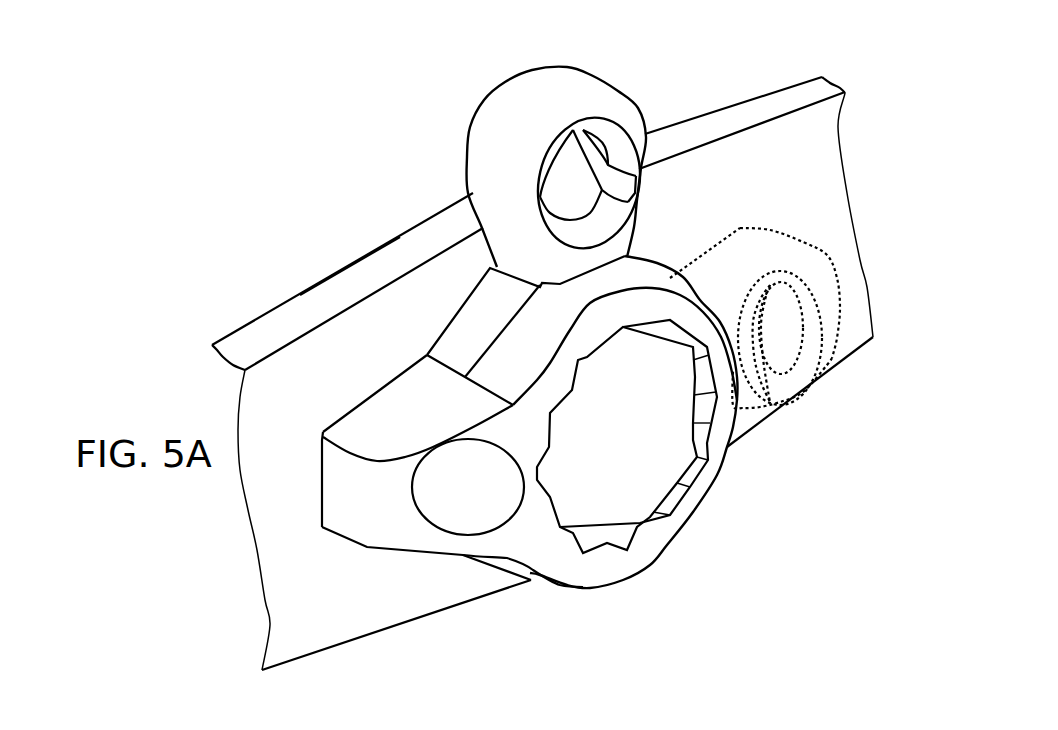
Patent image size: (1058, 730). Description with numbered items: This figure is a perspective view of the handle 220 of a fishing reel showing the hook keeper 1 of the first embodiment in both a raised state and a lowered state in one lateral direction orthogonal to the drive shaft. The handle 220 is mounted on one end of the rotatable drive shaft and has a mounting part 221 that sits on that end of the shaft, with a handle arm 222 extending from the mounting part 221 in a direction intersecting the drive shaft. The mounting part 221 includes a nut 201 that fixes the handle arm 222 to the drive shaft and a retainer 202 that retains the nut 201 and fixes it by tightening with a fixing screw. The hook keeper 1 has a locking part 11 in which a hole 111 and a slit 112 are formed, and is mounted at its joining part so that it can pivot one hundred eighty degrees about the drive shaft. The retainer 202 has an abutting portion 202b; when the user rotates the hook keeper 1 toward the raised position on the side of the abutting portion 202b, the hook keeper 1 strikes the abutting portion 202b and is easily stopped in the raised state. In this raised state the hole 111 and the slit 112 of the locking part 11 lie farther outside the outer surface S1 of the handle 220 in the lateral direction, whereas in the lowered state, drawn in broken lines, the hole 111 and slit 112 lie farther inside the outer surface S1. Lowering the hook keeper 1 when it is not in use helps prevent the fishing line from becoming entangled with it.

The hook keeper 1 is at (552, 85).
The locking part 11 is at (487, 132).
The hole 111 is at (568, 187).
The slit 112 is at (640, 184).
The nut 201 is at (615, 502).
The retainer 202 is at (547, 543).
The abutting portion 202b is at (508, 273).
The handle 220 is at (393, 127).
The mounting part 221 is at (690, 546).
The handle arm 222 is at (350, 343).
The outer surface S1 is at (367, 270).